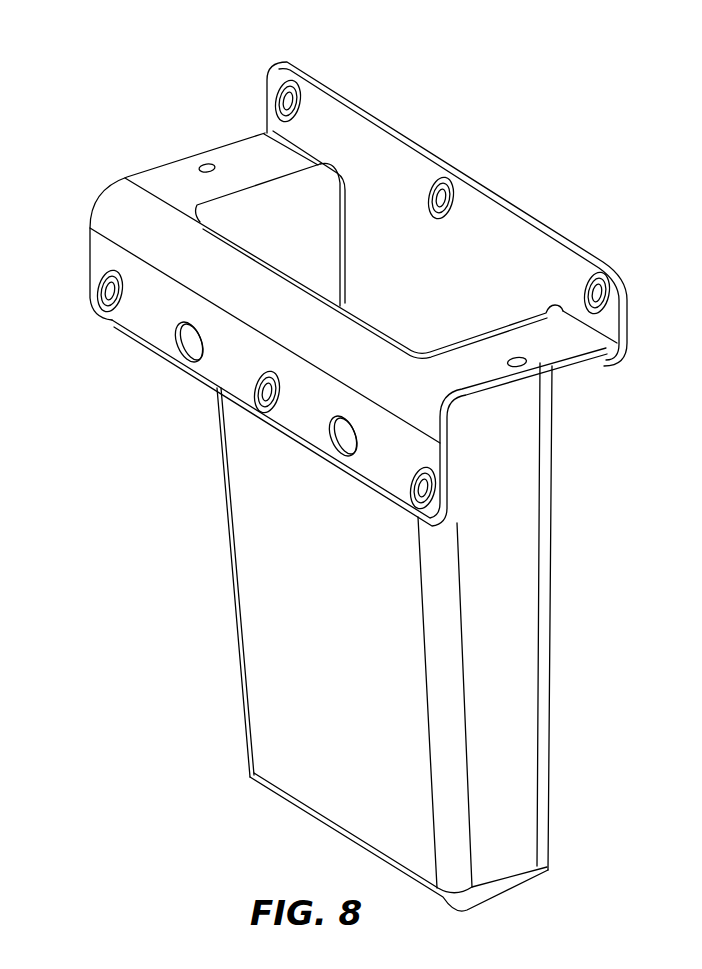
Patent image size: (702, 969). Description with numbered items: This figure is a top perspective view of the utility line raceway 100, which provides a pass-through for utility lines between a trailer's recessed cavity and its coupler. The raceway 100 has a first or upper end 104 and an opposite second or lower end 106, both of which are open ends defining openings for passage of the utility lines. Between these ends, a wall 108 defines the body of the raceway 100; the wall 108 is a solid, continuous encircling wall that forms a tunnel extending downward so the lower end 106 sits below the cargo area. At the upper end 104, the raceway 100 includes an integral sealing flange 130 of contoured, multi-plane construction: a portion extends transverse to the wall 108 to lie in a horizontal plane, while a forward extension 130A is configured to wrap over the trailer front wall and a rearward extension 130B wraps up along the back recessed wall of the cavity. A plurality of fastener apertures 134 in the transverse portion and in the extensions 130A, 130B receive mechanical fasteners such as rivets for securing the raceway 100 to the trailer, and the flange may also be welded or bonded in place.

The utility line raceway 100 is at (89, 150).
The upper end 104 is at (285, 236).
The lower end 106 is at (502, 898).
The wall 108 is at (507, 547).
The sealing flange 130 is at (549, 347).
The forward extension 130A is at (161, 330).
The rearward extension 130B is at (527, 254).
The fastener apertures 134 is at (289, 82).